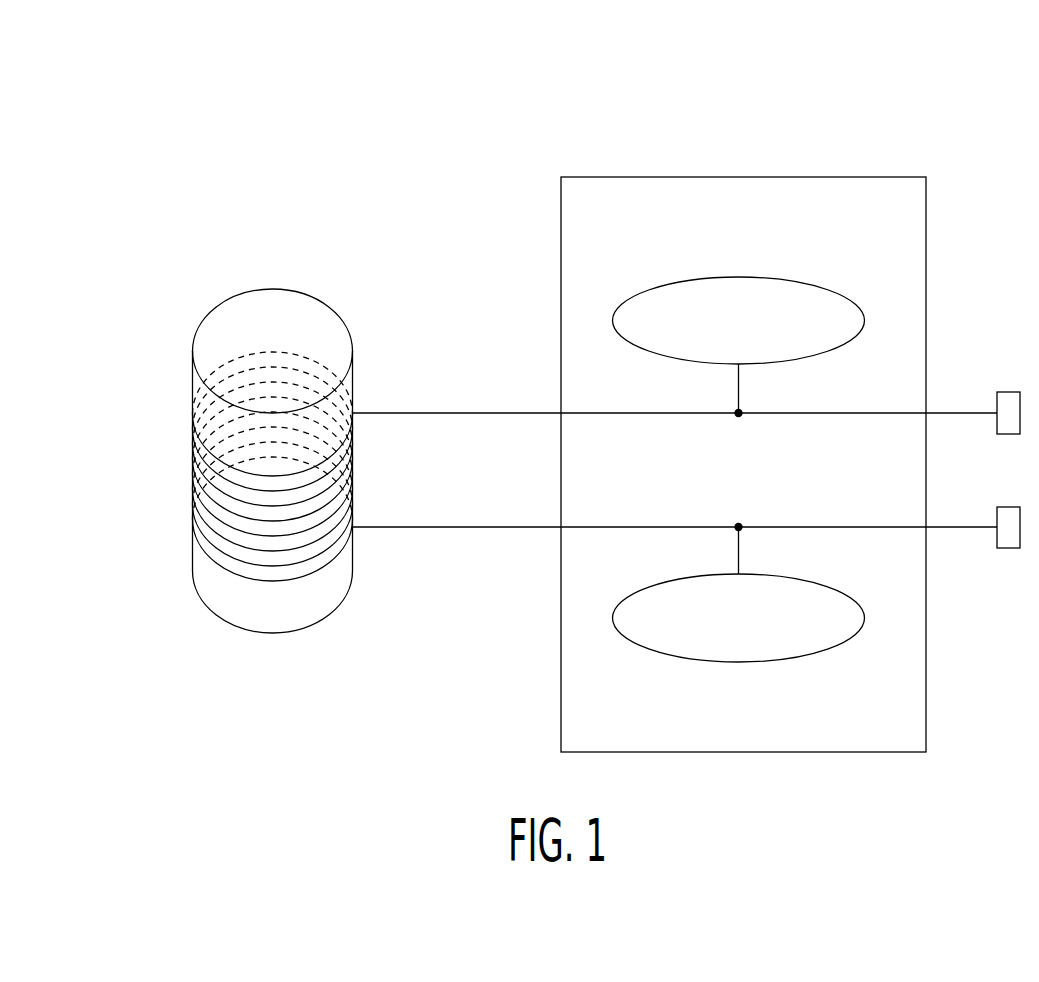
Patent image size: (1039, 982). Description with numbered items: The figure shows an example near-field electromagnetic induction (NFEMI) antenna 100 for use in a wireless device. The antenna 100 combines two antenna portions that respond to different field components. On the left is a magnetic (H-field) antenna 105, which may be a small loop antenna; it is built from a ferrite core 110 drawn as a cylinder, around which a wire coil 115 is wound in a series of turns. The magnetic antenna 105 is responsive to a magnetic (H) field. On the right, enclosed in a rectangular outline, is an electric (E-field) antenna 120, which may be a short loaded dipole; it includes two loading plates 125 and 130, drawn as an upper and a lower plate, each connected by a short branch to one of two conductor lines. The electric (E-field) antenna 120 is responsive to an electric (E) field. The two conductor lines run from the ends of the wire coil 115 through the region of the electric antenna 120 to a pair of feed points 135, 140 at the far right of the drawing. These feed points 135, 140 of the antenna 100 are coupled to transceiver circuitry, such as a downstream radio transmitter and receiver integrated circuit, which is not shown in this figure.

The near-field electromagnetic induction (NFEMI) antenna 100 is at (133, 146).
The magnetic (H-field) antenna 105 is at (247, 266).
The ferrite core 110 is at (205, 313).
The wire coil 115 is at (192, 490).
The electric (E-field) antenna 120 is at (926, 199).
The loading plate 125 is at (830, 291).
The loading plate 130 is at (820, 652).
The feed point 135 is at (1007, 392).
The feed point 140 is at (1005, 548).